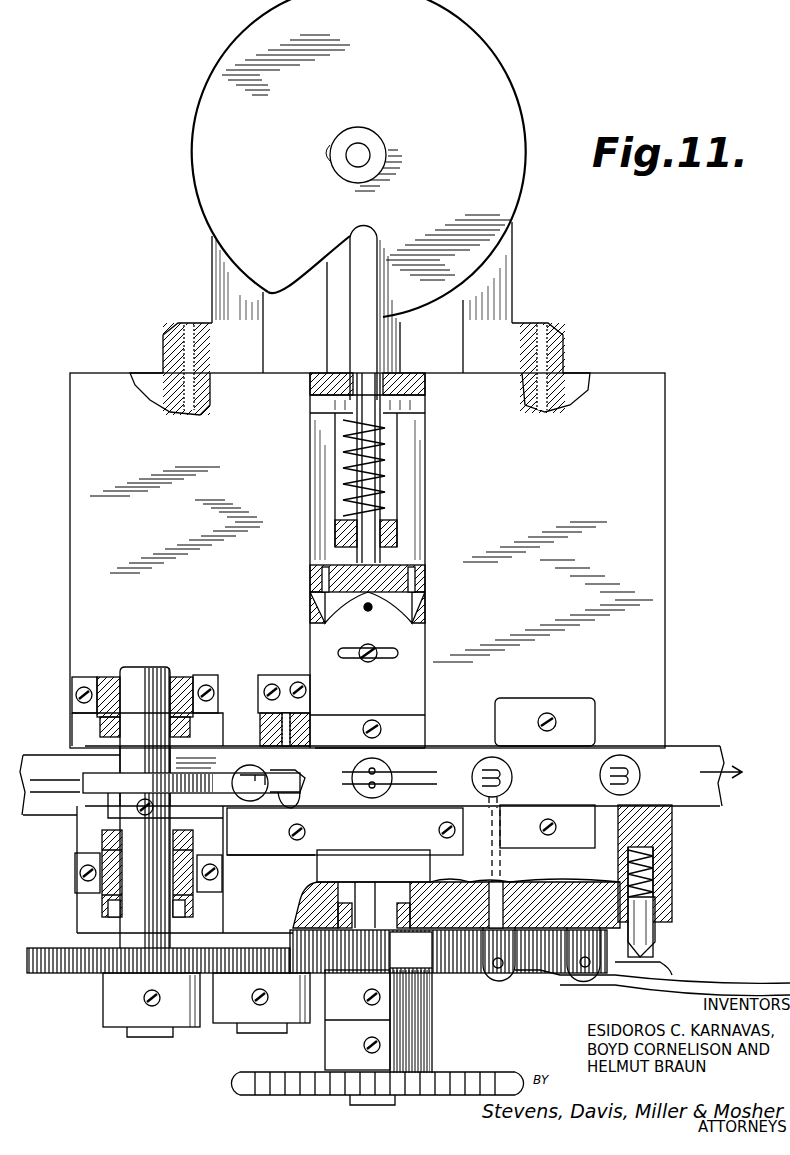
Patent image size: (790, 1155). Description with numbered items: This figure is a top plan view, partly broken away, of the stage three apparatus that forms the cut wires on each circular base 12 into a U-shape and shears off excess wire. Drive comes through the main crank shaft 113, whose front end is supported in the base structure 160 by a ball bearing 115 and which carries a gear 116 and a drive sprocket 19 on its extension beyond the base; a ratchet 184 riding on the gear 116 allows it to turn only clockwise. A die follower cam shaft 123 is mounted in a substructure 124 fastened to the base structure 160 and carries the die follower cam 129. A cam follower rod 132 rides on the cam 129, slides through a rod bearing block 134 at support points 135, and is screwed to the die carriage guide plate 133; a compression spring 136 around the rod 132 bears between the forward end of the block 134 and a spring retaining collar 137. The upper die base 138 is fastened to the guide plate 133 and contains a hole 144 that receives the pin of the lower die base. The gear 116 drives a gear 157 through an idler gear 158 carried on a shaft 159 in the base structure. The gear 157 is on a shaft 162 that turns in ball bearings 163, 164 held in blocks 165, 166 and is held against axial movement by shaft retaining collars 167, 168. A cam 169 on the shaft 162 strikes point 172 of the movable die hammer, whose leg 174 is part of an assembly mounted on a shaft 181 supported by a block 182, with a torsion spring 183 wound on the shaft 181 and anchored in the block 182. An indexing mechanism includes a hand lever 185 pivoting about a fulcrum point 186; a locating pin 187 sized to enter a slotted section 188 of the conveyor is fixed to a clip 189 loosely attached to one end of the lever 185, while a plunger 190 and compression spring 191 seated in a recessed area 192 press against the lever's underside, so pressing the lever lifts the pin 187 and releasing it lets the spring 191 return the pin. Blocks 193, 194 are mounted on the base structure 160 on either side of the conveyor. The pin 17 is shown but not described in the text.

The circular base 12 is at (635, 775).
The pin 17 is at (327, 310).
The drive sprocket 19 is at (290, 1097).
The main crank shaft 113 is at (395, 900).
The ball bearing 115 is at (340, 917).
The gear 116 is at (455, 973).
The die follower cam shaft 123 is at (362, 148).
The substructure 124 is at (512, 275).
The die follower cam 129 is at (208, 115).
The cam follower rod 132 is at (357, 340).
The die carriage guide plate 133 is at (425, 582).
The rod bearing block 134 is at (310, 396).
The support points 135 is at (335, 530).
The compression spring 136 is at (345, 458).
The spring retaining collar 137 is at (425, 405).
The upper die base 138 is at (310, 633).
The hole 144 is at (368, 612).
The gear 157 is at (70, 975).
The idler gear 158 is at (322, 1000).
The shaft 159 is at (233, 1030).
The base structure 160 is at (655, 535).
The shaft 162 is at (128, 910).
The ball bearing 163 is at (115, 900).
The ball bearing 164 is at (97, 682).
The block 165 is at (225, 882).
The block 166 is at (207, 677).
The shaft retaining collar 167 is at (100, 728).
The shaft retaining collar 168 is at (105, 845).
The cam 169 is at (85, 800).
The point of movable die hammer 172 is at (215, 782).
The leg 174 is at (265, 792).
The shaft 181 is at (285, 815).
The block 182 is at (288, 665).
The torsion spring 183 is at (320, 750).
The ratchet 184 is at (415, 962).
The lever 185 is at (705, 985).
The fulcrum point 186 is at (585, 980).
The locating pin 187 is at (512, 882).
The slotted section 188 is at (489, 820).
The clip 189 is at (500, 982).
The plunger 190 is at (655, 940).
The compression spring 191 is at (672, 876).
The recessed area 192 is at (668, 855).
The block 193 is at (568, 702).
The block 194 is at (556, 808).